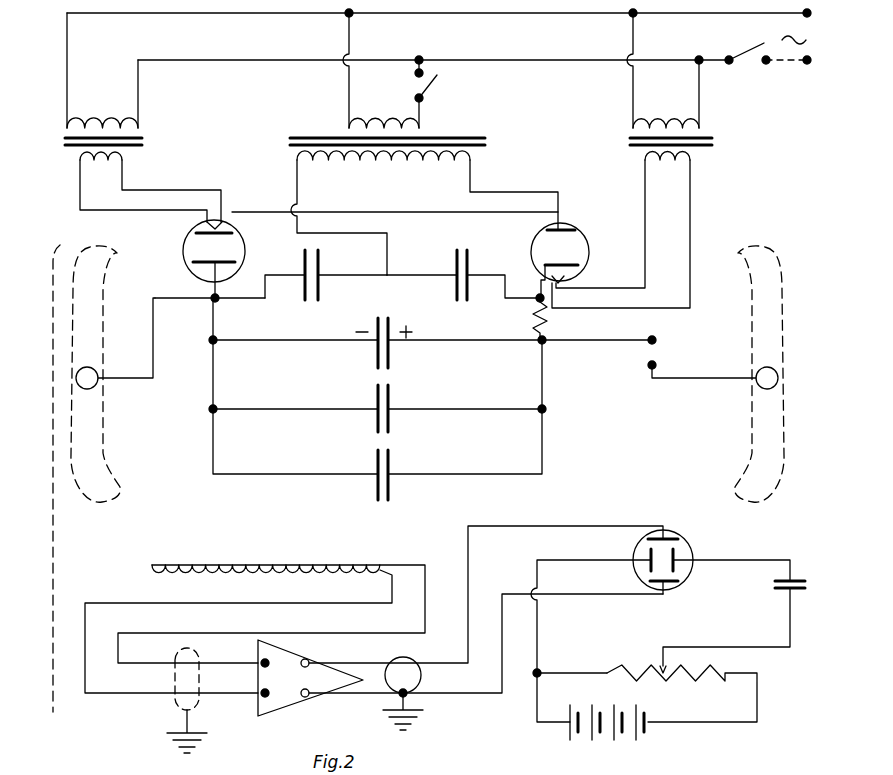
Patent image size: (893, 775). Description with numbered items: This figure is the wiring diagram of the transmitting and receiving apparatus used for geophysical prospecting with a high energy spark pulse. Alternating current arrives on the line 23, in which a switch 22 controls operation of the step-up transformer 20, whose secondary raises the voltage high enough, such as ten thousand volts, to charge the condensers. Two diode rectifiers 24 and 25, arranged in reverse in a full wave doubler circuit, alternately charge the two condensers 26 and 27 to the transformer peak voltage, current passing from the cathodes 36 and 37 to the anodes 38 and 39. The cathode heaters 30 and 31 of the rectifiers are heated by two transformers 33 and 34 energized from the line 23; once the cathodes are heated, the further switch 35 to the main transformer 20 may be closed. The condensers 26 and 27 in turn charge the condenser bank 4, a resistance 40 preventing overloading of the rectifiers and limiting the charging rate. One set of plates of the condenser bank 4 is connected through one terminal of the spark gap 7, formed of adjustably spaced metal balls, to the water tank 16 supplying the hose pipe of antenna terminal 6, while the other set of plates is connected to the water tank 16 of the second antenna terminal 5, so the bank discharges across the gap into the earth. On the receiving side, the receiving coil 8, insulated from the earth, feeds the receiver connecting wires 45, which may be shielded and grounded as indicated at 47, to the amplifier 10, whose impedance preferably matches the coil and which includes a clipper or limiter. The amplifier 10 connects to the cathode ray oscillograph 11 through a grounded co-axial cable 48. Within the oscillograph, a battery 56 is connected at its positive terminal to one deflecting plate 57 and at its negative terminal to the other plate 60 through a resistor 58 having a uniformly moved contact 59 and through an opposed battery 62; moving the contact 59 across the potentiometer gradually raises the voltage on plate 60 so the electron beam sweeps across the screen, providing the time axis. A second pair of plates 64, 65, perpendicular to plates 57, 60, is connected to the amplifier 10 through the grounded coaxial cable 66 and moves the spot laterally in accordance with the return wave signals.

The condenser bank 4 is at (392, 360).
The earth antenna terminal 5 is at (102, 427).
The earth antenna terminal 6 is at (752, 426).
The spark gap 7 is at (648, 365).
The receiving coil 8 is at (246, 566).
The amplifier 10 is at (281, 712).
The cathode ray oscillograph 11 is at (660, 586).
The water tank 16 is at (96, 368).
The step-up transformer 20 is at (345, 137).
The switch 22 is at (750, 52).
The line 23 is at (530, 13).
The diode rectifier 24 is at (348, 254).
The diode rectifier 25 is at (554, 260).
The condenser 26 is at (321, 290).
The condenser 27 is at (456, 275).
The cathode heater 30 is at (204, 218).
The cathode heater 31 is at (570, 280).
The transformer 33 is at (104, 124).
The transformer 34 is at (666, 126).
The switch 35 is at (434, 88).
The cathode 36 is at (196, 236).
The cathode 37 is at (582, 262).
The anode 38 is at (200, 258).
The anode 39 is at (580, 233).
The resistance 40 is at (536, 315).
The receiver connecting wires 45 is at (426, 602).
The shield ground 47 is at (175, 708).
The grounded co-axial cable 48 is at (421, 678).
The battery 56 is at (640, 740).
The deflecting plate 57 is at (640, 560).
The resistor 58 is at (631, 668).
The contact 59 is at (668, 661).
The deflecting plate 60 is at (686, 566).
The battery 62 is at (788, 592).
The plate 64 is at (667, 538).
The plate 65 is at (668, 589).
The grounded coaxial cable 66 is at (470, 640).